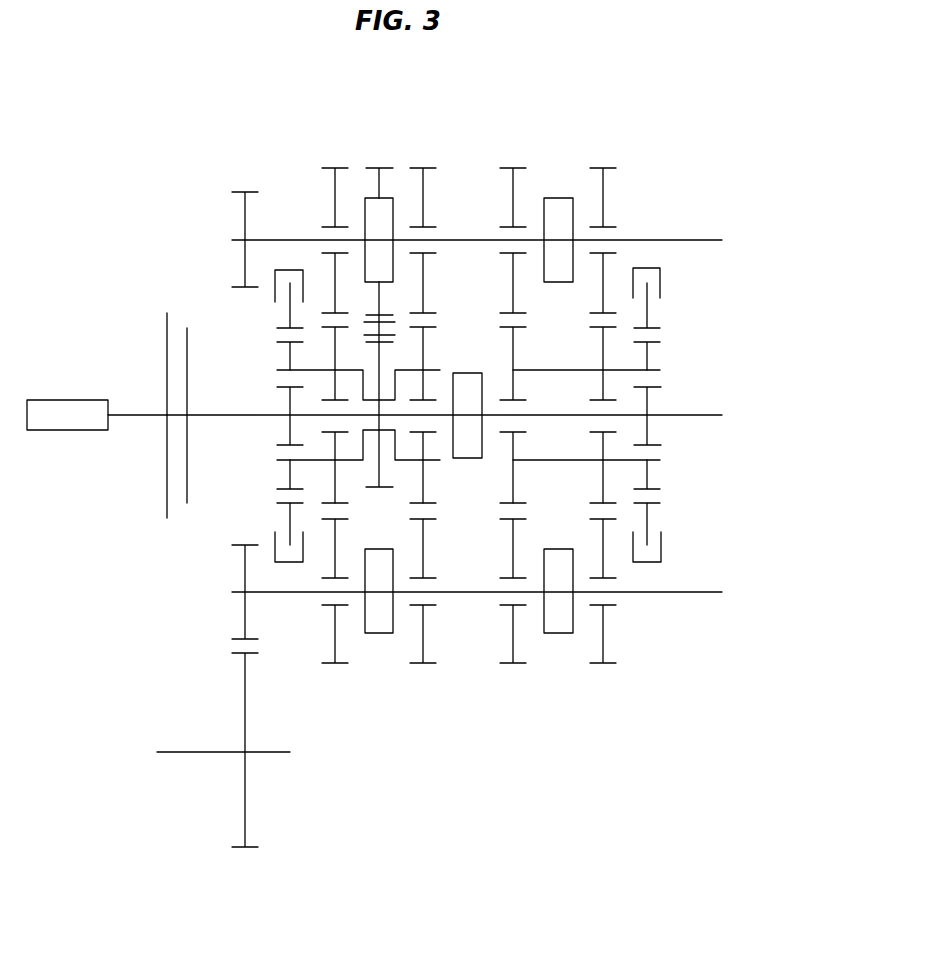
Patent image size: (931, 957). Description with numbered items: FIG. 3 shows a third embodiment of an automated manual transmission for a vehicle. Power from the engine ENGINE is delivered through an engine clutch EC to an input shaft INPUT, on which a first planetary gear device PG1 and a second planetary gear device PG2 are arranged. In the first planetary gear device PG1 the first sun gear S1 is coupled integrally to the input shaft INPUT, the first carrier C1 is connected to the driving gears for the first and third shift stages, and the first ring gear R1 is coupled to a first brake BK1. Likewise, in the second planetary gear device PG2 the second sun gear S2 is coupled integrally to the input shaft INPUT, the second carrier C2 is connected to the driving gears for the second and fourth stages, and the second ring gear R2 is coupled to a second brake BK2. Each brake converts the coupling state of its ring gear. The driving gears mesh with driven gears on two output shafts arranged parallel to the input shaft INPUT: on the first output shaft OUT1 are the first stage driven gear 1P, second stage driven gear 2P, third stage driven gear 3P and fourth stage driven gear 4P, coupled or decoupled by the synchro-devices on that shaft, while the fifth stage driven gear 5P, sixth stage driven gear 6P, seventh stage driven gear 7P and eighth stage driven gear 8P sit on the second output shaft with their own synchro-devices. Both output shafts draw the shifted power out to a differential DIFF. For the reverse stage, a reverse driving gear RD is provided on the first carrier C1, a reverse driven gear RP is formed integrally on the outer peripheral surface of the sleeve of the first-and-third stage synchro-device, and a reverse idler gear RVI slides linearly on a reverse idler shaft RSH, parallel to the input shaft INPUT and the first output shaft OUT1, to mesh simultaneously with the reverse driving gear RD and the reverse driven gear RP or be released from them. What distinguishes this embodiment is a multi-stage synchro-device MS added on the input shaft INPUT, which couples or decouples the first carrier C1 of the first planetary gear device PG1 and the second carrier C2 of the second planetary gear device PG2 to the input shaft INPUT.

The first output shaft OUT1 is at (692, 240).
The input shaft INPUT is at (688, 415).
The engine ENGINE is at (97, 415).
The engine clutch EC is at (158, 483).
The first planetary gear device PG1 is at (270, 303).
The first brake BK1 is at (288, 270).
The first ring gear R1 is at (268, 331).
The first sun gear S1 is at (277, 388).
The first carrier C1 is at (277, 370).
The first stage driven gear 1P is at (330, 167).
The fifth stage driven gear 5P is at (330, 666).
The reverse driven gear RP is at (373, 167).
The reverse idler gear RVI is at (367, 313).
The reverse idler shaft RSH is at (367, 327).
The reverse driving gear RD is at (378, 489).
The third stage driven gear 3P is at (433, 167).
The seventh stage driven gear 7P is at (432, 666).
The multi-stage synchro-device MS is at (467, 373).
The fourth stage driven gear 4P is at (522, 167).
The eighth stage driven gear 8P is at (505, 666).
The second stage driven gear 2P is at (610, 167).
The sixth stage driven gear 6P is at (608, 666).
The second planetary gear device PG2 is at (643, 330).
The second brake BK2 is at (645, 268).
The second ring gear R2 is at (650, 328).
The second sun gear S2 is at (662, 388).
The second carrier C2 is at (662, 371).
The differential DIFF is at (225, 768).